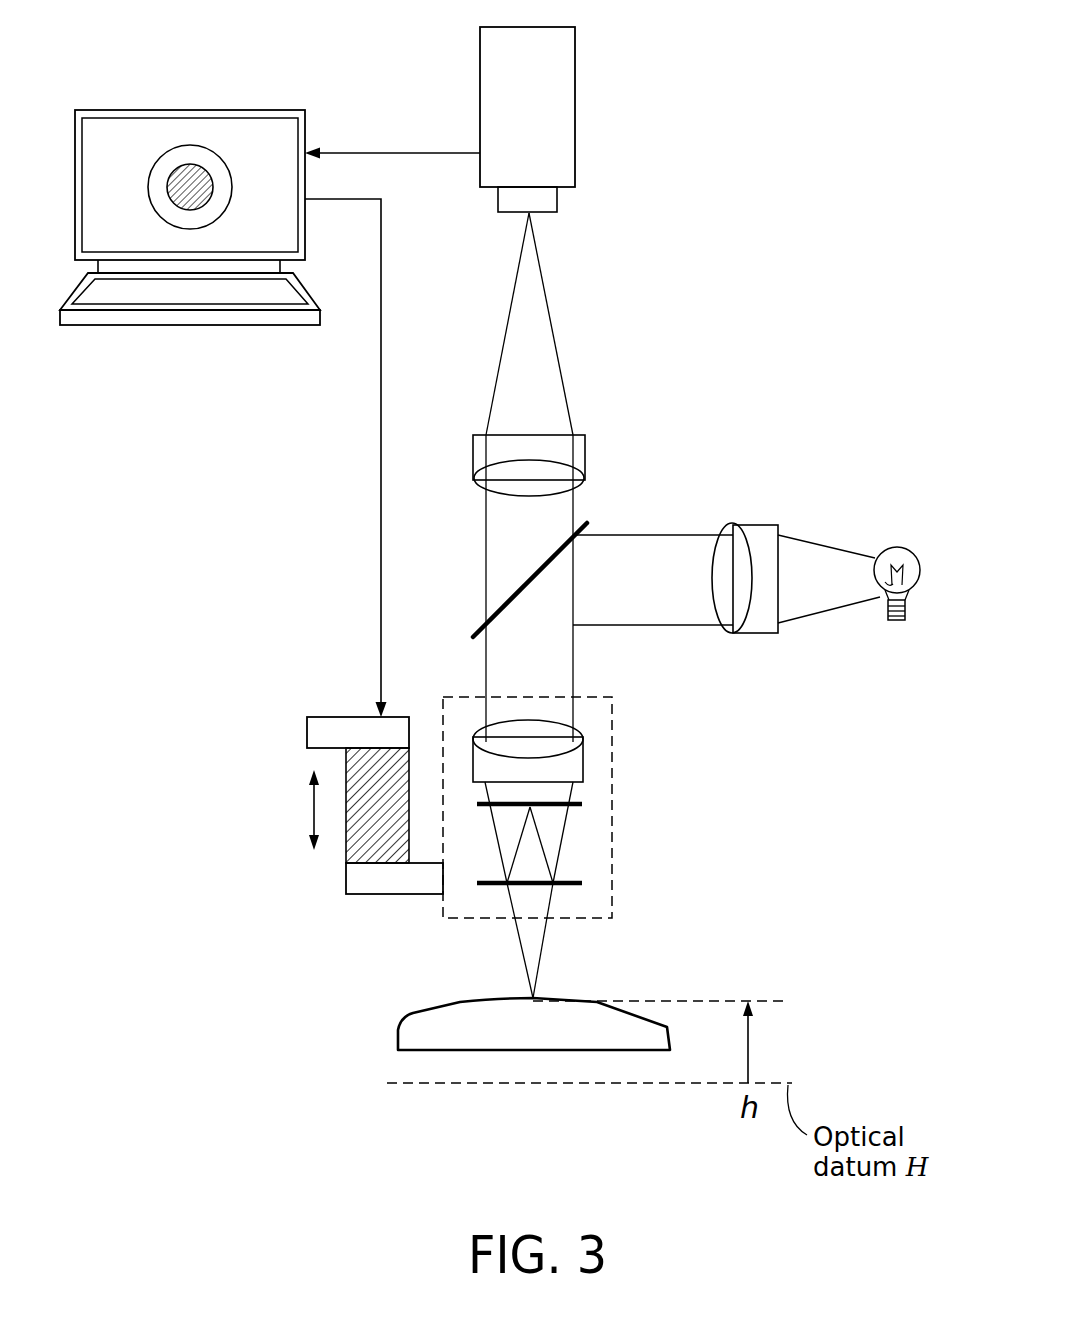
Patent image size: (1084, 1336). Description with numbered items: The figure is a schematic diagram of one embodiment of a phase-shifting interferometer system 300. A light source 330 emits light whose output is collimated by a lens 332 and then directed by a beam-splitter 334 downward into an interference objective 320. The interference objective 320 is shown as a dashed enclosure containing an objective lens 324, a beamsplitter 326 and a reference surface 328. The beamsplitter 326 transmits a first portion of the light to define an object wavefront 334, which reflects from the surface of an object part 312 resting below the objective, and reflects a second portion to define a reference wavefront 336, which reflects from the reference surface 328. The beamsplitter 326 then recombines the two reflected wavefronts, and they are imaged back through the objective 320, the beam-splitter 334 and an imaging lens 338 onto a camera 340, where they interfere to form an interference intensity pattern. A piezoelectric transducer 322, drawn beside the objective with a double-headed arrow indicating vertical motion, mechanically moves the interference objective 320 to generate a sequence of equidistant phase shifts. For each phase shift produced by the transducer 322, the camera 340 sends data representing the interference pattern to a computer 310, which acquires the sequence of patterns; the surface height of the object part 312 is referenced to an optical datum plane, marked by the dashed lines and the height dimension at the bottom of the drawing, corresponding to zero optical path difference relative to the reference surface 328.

The interferometer system 300 is at (683, 143).
The computer 310 is at (215, 110).
The object part 312 is at (447, 1002).
The interference objective 320 is at (602, 697).
The piezoelectric transducer 322 is at (345, 878).
The objective lens 324 is at (583, 758).
The beamsplitter 326 is at (582, 883).
The reference surface 328 is at (582, 804).
The light source 330 is at (910, 550).
The lens 332 is at (750, 525).
The beam-splitter / object wavefront 334 is at (473, 637).
The reference wavefront 336 is at (543, 842).
The imaging lens 338 is at (585, 443).
The camera 340 is at (575, 53).